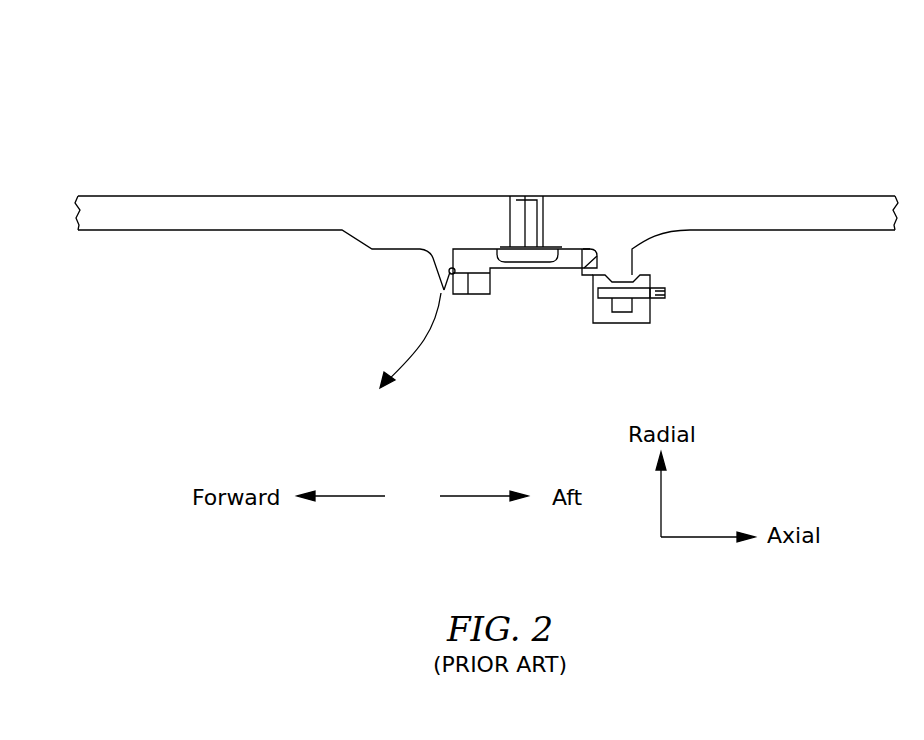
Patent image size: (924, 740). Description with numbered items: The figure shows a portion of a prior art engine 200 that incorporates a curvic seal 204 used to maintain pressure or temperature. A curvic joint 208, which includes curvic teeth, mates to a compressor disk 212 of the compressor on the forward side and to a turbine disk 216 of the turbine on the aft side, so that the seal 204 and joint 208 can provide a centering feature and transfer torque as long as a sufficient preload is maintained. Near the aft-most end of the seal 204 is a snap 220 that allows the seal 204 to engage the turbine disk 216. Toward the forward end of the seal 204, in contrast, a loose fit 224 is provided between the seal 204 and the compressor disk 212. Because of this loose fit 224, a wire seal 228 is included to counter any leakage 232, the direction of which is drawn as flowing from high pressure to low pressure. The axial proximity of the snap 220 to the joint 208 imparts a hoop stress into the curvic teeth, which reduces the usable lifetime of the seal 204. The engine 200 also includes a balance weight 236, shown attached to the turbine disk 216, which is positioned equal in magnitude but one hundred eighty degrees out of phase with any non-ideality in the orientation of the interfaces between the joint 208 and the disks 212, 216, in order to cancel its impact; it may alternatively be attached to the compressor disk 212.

The engine 200 is at (743, 117).
The curvic seal 204 is at (530, 268).
The curvic joint 208 is at (533, 220).
The compressor disk 212 is at (277, 221).
The turbine disk 216 is at (742, 217).
The snap 220 is at (582, 275).
The loose fit 224 is at (478, 278).
The wire seal 228 is at (452, 268).
The leakage 232 is at (507, 247).
The balance weight 236 is at (655, 307).